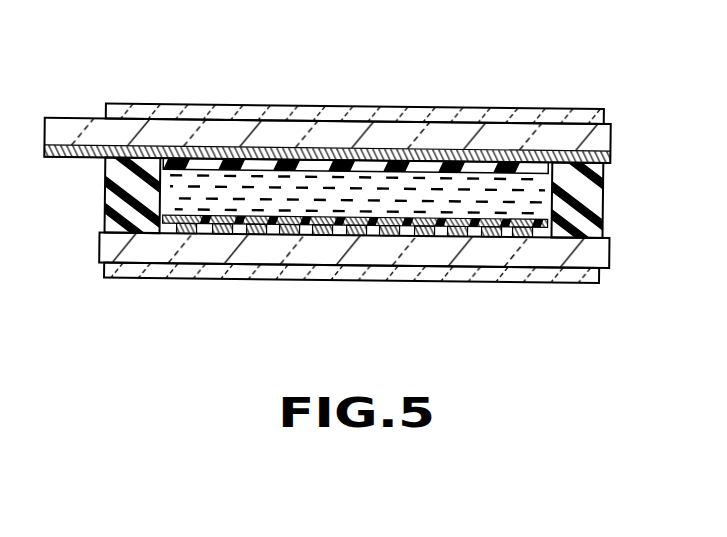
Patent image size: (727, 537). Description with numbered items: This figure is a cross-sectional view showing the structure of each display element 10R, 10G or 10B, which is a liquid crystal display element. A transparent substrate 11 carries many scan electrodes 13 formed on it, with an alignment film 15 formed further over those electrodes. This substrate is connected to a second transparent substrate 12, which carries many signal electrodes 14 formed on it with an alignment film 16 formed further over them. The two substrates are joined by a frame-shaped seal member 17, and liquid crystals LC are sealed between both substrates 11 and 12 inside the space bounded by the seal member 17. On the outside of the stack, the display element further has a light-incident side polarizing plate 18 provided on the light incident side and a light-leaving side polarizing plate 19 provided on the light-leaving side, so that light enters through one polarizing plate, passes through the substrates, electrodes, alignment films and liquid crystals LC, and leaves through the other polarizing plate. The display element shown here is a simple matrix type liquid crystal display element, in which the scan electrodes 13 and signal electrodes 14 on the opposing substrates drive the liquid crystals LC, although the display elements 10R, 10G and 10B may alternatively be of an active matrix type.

The display element 10R is at (352, 191).
The display element 10G is at (352, 191).
The display element 10B is at (352, 191).
The transparent substrate 11 is at (363, 104).
The transparent substrate 12 is at (600, 250).
The scan electrodes 13 is at (385, 160).
The signal electrodes 14 is at (292, 233).
The alignment film 15 is at (300, 162).
The alignment film 16 is at (408, 226).
The seal member 17 is at (597, 190).
The light-incident side polarizing plate 18 is at (155, 273).
The light-leaving side polarizing plate 19 is at (165, 106).
The liquid crystals LC is at (167, 197).